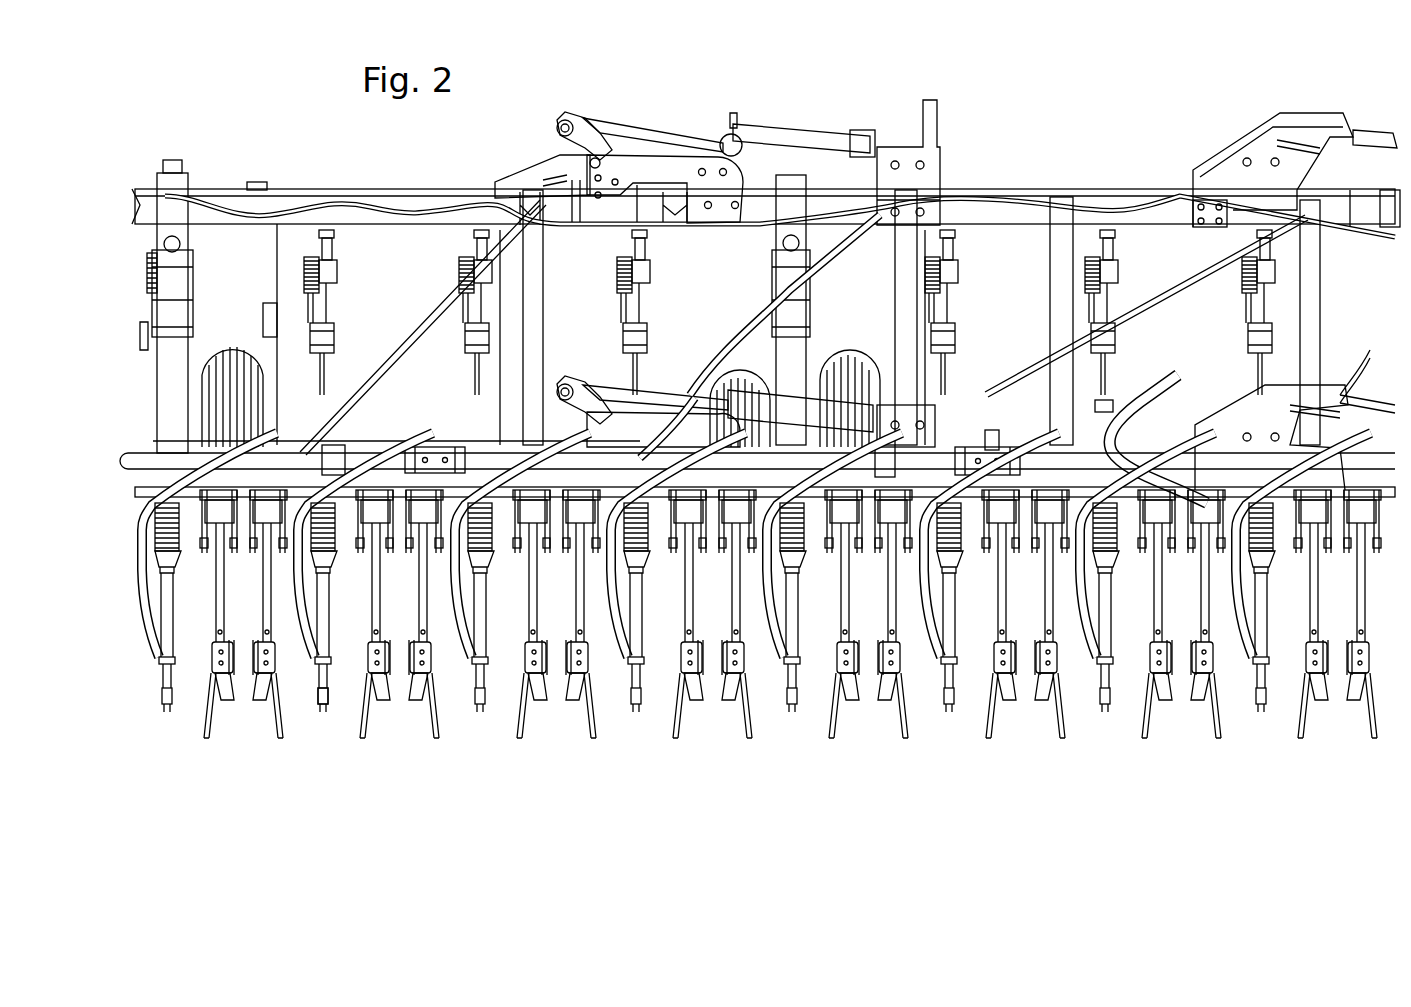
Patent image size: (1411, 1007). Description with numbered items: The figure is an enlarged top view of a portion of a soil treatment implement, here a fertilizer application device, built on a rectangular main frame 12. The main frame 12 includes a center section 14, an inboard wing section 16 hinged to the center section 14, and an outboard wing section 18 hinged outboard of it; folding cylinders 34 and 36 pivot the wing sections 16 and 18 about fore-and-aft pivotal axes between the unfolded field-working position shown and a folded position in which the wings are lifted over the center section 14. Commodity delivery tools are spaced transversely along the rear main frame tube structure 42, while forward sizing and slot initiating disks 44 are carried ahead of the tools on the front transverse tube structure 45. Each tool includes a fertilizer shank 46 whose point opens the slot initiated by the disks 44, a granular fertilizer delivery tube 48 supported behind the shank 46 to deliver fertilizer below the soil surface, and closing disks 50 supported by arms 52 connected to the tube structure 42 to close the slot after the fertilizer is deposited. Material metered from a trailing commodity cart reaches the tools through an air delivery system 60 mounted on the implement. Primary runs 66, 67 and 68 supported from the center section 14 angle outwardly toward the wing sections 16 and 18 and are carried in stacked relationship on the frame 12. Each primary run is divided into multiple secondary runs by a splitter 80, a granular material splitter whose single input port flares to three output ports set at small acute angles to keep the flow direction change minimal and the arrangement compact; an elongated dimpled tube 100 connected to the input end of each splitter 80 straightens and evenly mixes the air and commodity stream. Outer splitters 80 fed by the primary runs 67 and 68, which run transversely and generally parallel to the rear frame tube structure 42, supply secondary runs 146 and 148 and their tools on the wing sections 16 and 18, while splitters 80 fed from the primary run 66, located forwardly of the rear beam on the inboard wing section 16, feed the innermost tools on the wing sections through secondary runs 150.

The main frame 12 is at (1390, 373).
The center section 14 is at (1392, 185).
The inboard wing section 16 is at (1020, 212).
The outboard wing section 18 is at (310, 195).
The folding cylinder 34 is at (1375, 128).
The folding cylinder 36 is at (785, 125).
The rear main frame tube structure 42 is at (402, 487).
The sizing and slot initiating disks 44 is at (357, 385).
The front transverse tube structure 45 is at (425, 210).
The fertilizer shanks 46 is at (315, 672).
The granular fertilizer delivery tubes 48 is at (328, 693).
The closing disks 50 is at (827, 735).
The arms 52 is at (733, 588).
The air delivery system 60 is at (1217, 340).
The primary run 66 is at (1365, 393).
The primary run 67 is at (1133, 392).
The primary run 68 is at (493, 453).
The splitter 80 is at (387, 440).
The elongated dimpled tube 100 is at (993, 432).
The secondary runs 146 is at (758, 395).
The secondary runs 148 is at (310, 485).
The secondary runs 150 is at (1250, 645).